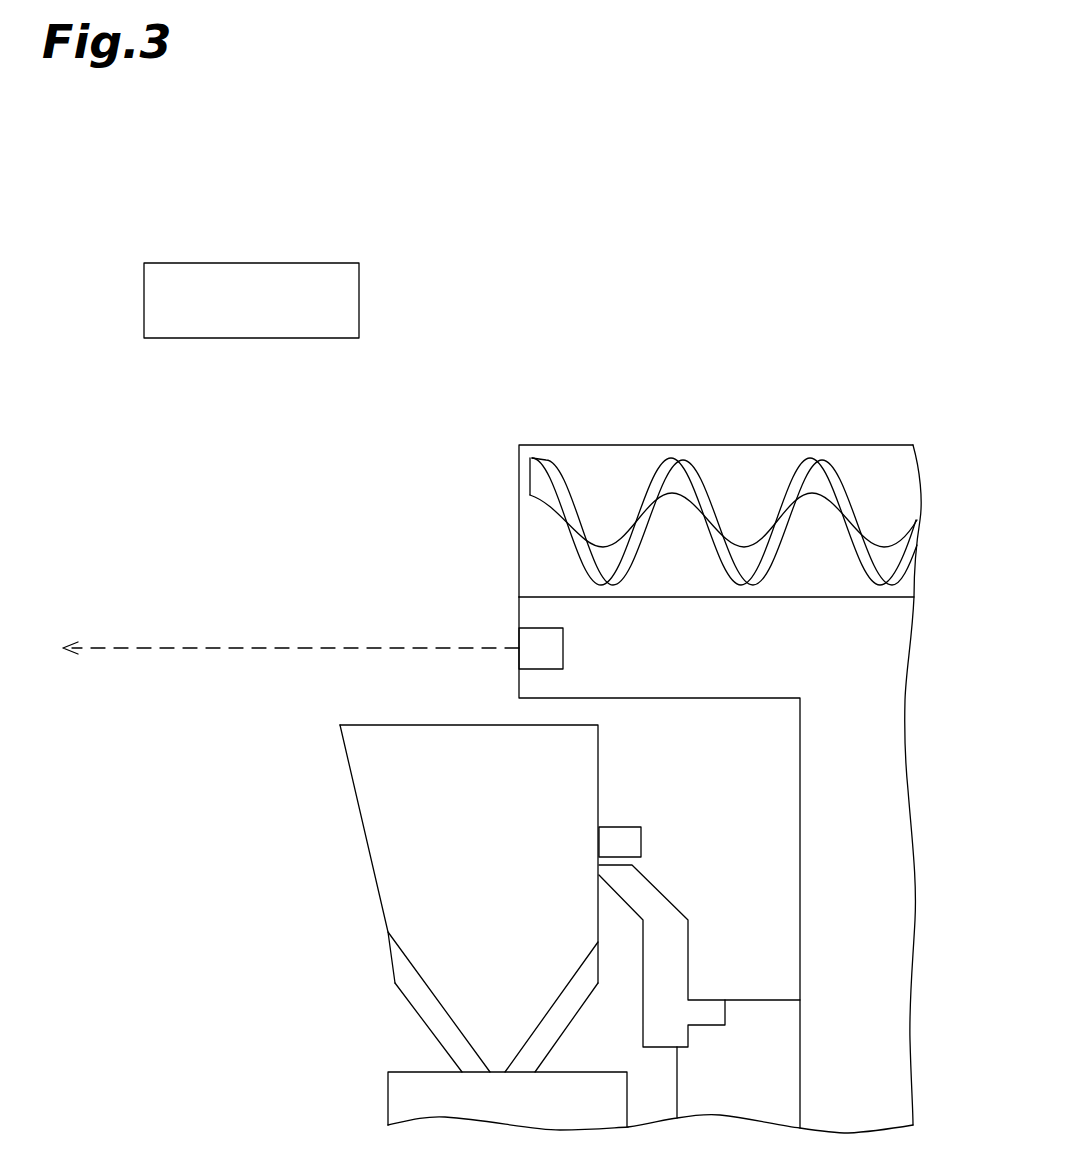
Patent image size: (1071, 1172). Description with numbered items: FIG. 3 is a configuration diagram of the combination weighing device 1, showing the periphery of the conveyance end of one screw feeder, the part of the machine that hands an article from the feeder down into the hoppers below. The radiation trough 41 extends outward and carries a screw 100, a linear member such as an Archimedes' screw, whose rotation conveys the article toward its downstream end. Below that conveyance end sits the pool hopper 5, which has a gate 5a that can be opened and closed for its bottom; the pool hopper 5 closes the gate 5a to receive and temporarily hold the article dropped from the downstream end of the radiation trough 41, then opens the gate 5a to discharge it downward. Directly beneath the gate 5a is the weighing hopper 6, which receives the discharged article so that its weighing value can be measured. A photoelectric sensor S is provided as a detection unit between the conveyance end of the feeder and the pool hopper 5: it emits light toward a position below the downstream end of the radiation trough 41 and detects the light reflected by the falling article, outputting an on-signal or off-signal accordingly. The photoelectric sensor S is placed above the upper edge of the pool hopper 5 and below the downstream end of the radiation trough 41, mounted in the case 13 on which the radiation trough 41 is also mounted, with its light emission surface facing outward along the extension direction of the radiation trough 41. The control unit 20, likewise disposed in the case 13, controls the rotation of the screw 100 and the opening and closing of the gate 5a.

The combination weighing device 1 is at (853, 260).
The control unit 20 is at (359, 300).
The radiation trough 41 is at (532, 572).
The screw 100 is at (841, 472).
The photoelectric sensor S is at (531, 654).
The case 13 is at (813, 836).
The pool hopper 5 is at (363, 772).
The gate 5a is at (426, 1008).
The weighing hopper 6 is at (395, 1096).